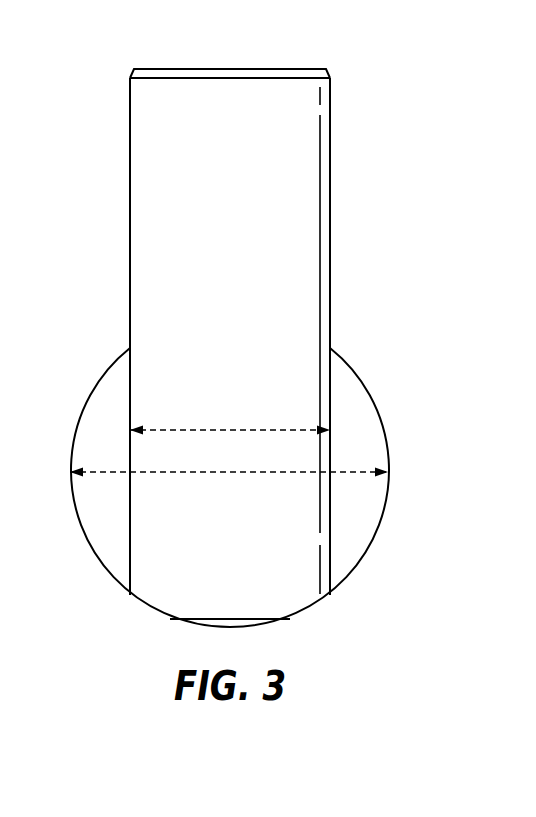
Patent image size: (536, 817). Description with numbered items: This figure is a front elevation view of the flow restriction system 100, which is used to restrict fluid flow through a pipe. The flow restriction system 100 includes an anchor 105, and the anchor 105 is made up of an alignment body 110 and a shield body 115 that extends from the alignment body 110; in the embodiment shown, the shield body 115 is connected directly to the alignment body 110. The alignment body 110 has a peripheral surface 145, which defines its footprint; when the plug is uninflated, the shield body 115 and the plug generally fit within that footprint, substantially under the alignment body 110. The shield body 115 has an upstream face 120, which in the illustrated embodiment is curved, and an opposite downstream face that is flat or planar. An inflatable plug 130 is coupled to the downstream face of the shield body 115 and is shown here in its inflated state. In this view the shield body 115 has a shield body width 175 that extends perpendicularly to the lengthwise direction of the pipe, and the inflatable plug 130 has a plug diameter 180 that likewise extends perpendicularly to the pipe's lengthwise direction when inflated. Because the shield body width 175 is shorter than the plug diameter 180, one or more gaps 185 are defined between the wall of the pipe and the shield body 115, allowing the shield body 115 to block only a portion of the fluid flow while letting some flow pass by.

The flow restriction system 100 is at (370, 143).
The anchor 105 is at (305, 298).
The alignment body 110 is at (143, 102).
The shield body 115 is at (312, 540).
The upstream face 120 is at (245, 572).
The inflatable plug 130 is at (92, 440).
The peripheral surface 145 is at (250, 198).
The shield body width 175 is at (233, 430).
The plug diameter 180 is at (240, 472).
The gaps 185 is at (107, 418).